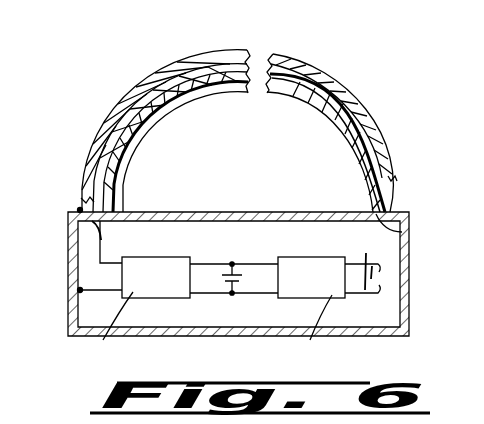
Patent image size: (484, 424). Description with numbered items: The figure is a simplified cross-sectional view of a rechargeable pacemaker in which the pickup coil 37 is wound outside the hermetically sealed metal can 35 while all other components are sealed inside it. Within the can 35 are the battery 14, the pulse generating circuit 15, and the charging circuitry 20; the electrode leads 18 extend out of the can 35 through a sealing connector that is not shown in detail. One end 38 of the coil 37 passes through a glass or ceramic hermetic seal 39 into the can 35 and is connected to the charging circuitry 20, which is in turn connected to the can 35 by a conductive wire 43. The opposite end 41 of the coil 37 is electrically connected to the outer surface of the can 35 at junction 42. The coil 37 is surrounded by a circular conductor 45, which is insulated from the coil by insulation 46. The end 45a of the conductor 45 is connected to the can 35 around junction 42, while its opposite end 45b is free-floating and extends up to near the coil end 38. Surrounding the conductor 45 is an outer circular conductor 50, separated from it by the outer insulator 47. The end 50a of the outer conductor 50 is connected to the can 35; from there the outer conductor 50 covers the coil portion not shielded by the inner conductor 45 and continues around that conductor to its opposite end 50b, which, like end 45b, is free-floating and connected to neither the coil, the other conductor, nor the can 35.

The battery 14 is at (235, 283).
The pulse generating circuit 15 is at (310, 319).
The electrode leads 18 is at (366, 257).
The charging circuitry 20 is at (125, 319).
The metal can 35 is at (412, 276).
The pickup coil 37 is at (193, 70).
The end of coil 38 is at (100, 232).
The hermetic seal 39 is at (93, 221).
The opposite end of coil 41 is at (372, 186).
The junction 42 is at (402, 232).
The conductive wire 43 is at (98, 290).
The circular conductor 45 is at (339, 100).
The end of conductor 45a is at (372, 200).
The free-floating end 45b is at (118, 200).
The insulation 46 is at (366, 112).
The outer insulator 47 is at (386, 137).
The outer circular conductor 50 is at (114, 111).
The end of outer conductor 50a is at (80, 208).
The opposite end of outer conductor 50b is at (393, 176).